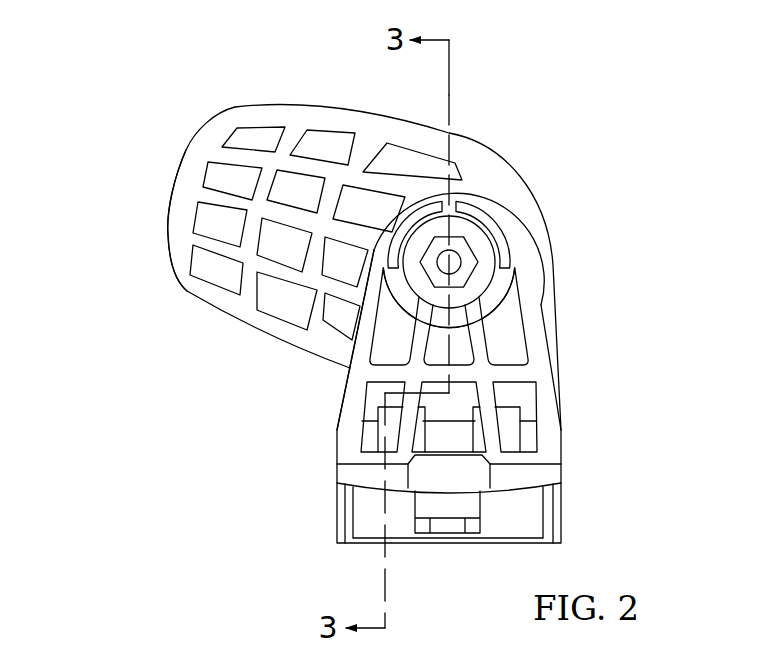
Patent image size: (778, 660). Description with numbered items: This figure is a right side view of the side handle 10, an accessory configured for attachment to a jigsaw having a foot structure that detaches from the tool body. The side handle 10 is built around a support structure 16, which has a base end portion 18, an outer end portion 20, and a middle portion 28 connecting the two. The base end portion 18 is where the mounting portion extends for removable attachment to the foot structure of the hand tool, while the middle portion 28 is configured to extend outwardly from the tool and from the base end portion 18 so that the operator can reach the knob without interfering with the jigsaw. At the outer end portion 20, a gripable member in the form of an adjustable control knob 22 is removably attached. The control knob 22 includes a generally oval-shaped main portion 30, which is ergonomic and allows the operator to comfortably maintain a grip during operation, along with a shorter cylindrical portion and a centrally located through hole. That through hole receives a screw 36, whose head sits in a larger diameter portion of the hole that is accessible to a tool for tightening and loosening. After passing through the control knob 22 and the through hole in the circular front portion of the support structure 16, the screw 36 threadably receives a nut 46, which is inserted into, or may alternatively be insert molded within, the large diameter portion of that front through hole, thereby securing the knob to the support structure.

The side handle 10 is at (127, 131).
The support structure 16 is at (581, 388).
The base end portion 18 is at (337, 509).
The outer end portion 20 is at (503, 223).
The control knob 22 is at (176, 294).
The middle portion 28 is at (347, 388).
The oval-shaped main portion 30 is at (302, 107).
The screw 36 is at (455, 263).
The nut 46 is at (462, 279).